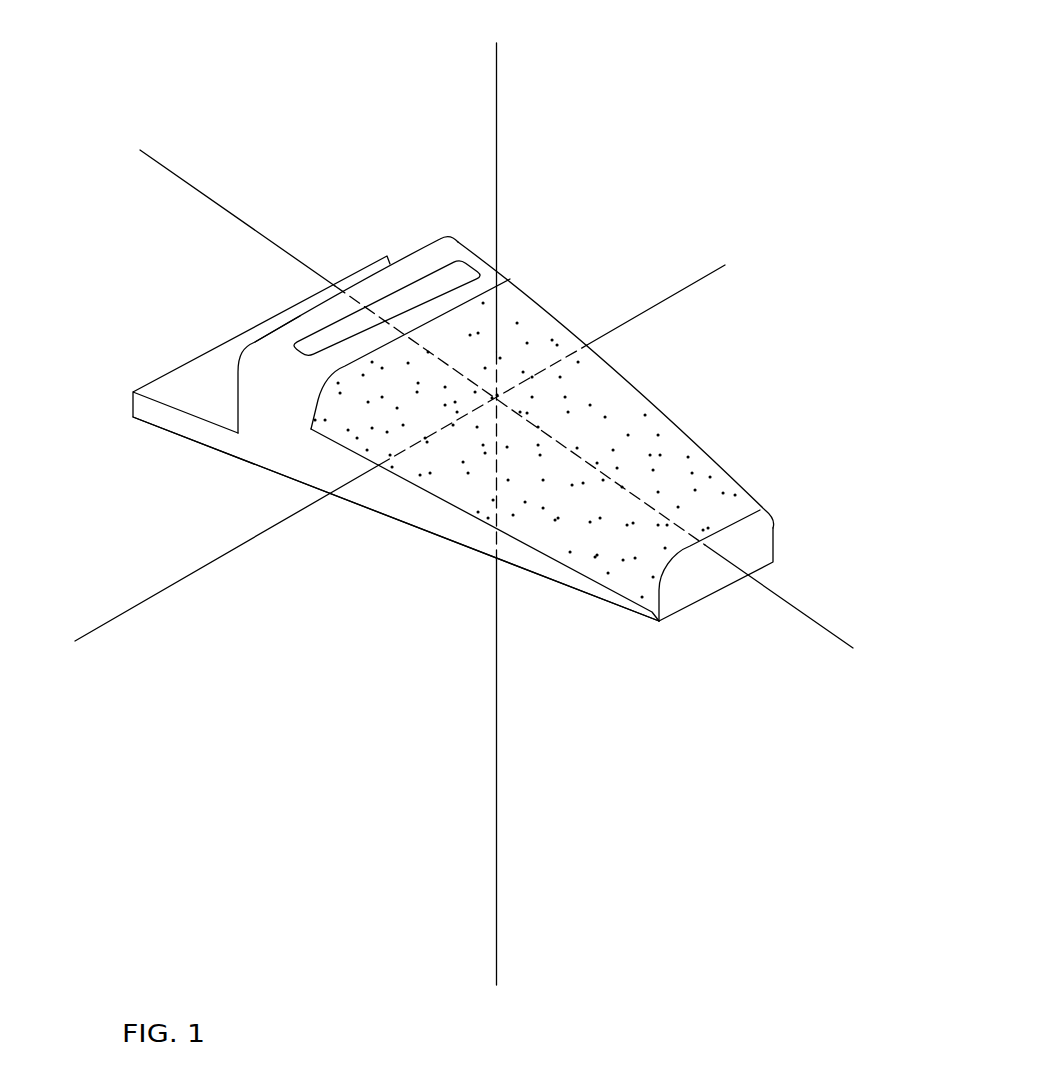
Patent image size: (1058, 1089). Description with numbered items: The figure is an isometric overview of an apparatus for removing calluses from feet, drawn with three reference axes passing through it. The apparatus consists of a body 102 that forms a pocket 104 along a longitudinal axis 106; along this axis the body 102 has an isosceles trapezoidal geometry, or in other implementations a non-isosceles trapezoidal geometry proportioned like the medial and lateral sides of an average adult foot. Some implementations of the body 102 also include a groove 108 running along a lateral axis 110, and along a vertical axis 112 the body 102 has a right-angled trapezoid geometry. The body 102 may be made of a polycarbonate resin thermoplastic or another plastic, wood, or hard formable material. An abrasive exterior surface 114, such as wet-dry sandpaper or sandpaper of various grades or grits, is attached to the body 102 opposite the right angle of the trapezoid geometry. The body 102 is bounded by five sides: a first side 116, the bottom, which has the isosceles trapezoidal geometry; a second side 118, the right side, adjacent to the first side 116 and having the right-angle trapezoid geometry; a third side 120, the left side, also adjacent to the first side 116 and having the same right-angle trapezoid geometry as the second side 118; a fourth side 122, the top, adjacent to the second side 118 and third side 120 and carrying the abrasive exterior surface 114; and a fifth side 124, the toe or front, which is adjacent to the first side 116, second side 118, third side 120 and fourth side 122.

The body 102 is at (497, 404).
The pocket 104 is at (238, 370).
The longitudinal axis 106 is at (807, 613).
The groove 108 is at (432, 282).
The lateral axis 110 is at (127, 609).
The vertical axis 112 is at (497, 113).
The abrasive exterior surface 114 is at (598, 397).
The first side 116 is at (443, 537).
The second side 118 is at (285, 445).
The third side 120 is at (685, 433).
The fourth side 122 is at (452, 247).
The fifth side 124 is at (757, 542).